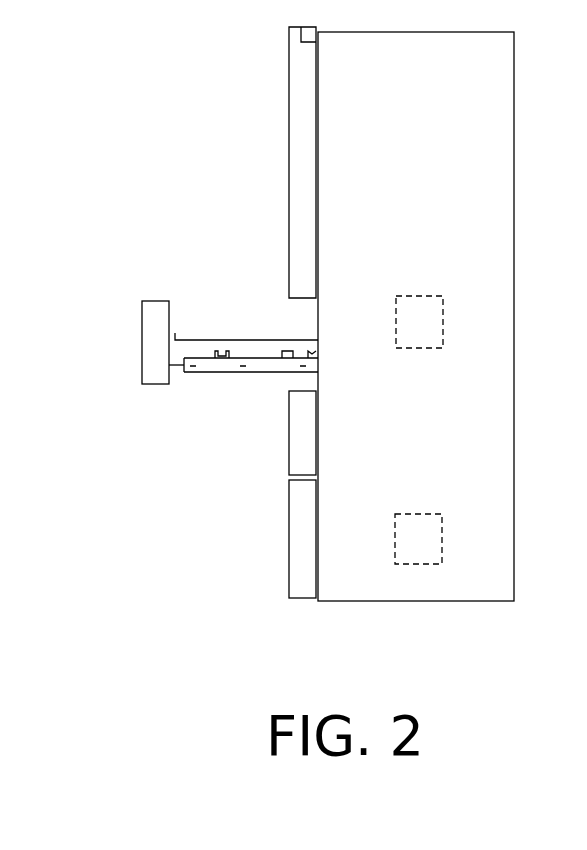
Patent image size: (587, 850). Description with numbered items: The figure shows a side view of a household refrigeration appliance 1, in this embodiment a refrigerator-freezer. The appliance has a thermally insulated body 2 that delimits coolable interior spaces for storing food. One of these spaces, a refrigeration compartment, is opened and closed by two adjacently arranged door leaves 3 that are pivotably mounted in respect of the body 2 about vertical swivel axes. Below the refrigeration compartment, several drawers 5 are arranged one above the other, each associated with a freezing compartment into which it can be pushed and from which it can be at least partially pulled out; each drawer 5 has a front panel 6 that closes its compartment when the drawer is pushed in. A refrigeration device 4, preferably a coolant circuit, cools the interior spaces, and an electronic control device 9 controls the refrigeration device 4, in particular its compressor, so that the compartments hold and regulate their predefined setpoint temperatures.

The household refrigeration appliance 1 is at (96, 68).
The thermally insulated body 2 is at (423, 154).
The door leaves 3 is at (296, 177).
The refrigeration device 4 is at (427, 552).
The drawers 5 is at (149, 279).
The front panel 6 is at (147, 337).
The electronic control device 9 is at (428, 338).